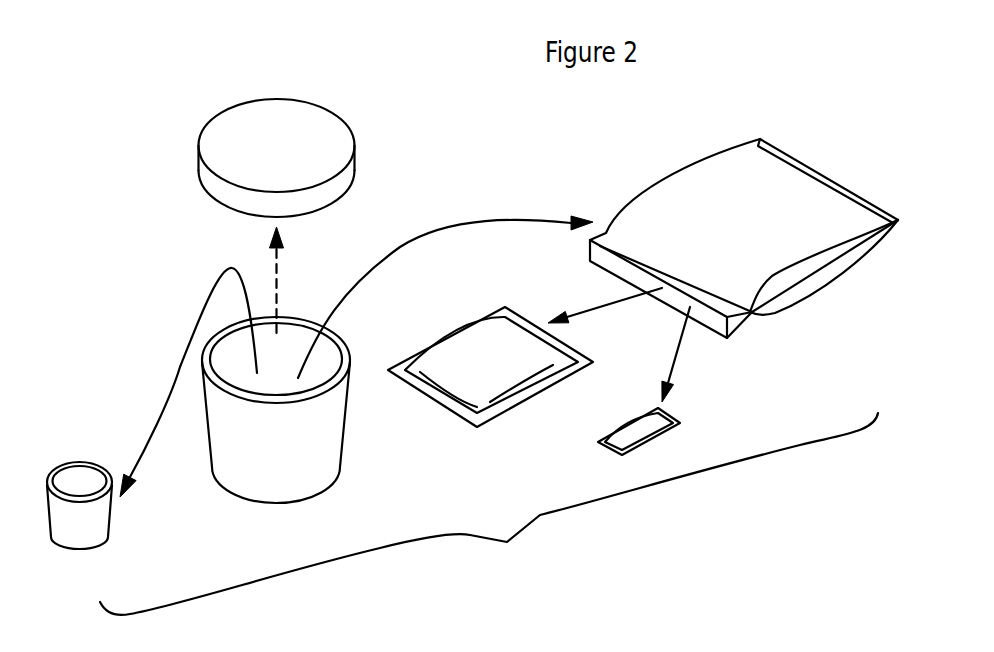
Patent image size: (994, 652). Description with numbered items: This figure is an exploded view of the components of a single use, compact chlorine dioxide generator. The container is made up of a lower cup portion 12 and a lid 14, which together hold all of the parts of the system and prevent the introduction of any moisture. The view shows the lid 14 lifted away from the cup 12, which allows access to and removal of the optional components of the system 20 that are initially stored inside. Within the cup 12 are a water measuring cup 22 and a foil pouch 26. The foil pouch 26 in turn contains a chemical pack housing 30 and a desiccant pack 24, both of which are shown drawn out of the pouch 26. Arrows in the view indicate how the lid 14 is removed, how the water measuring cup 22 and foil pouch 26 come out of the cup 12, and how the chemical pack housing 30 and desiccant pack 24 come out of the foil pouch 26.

The lower cup portion 12 is at (342, 410).
The lid 14 is at (332, 122).
The optional components of the system 20 is at (489, 514).
The water measuring cup 22 is at (100, 512).
The desiccant pack 24 is at (670, 440).
The foil pouch 26 is at (792, 187).
The chemical pack housing 30 is at (480, 338).